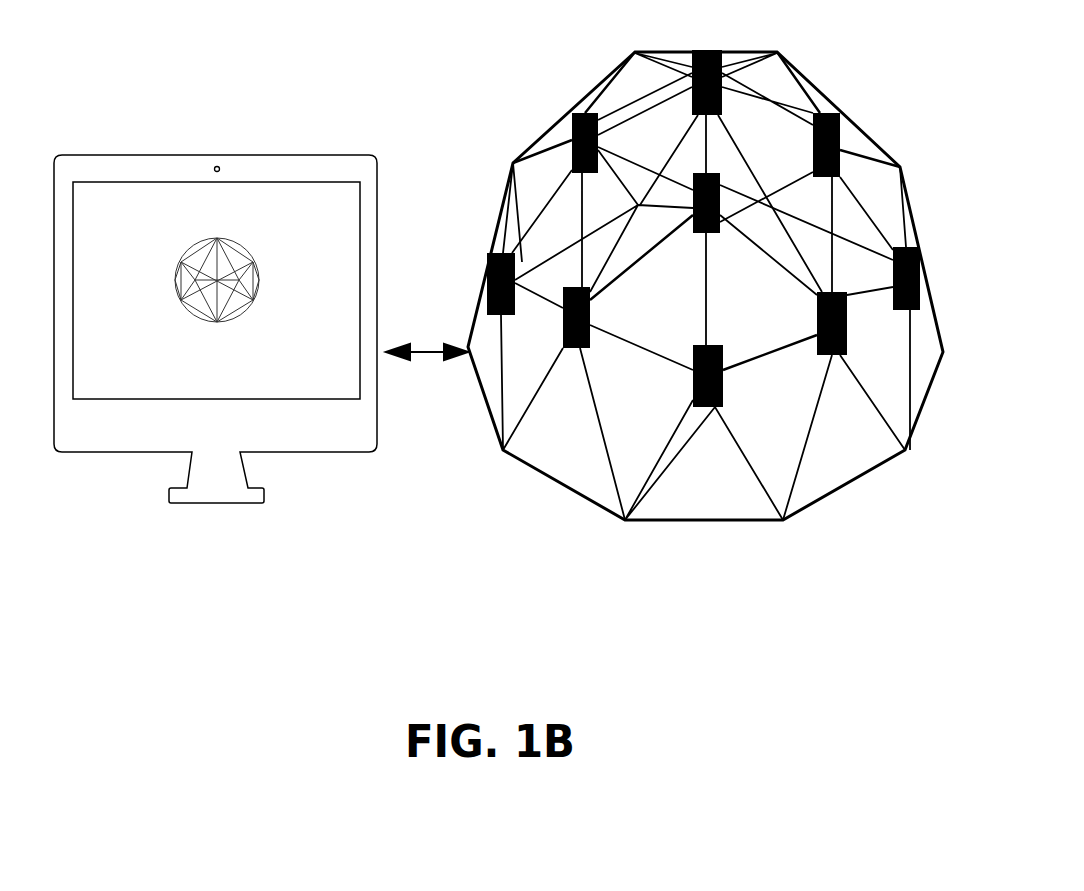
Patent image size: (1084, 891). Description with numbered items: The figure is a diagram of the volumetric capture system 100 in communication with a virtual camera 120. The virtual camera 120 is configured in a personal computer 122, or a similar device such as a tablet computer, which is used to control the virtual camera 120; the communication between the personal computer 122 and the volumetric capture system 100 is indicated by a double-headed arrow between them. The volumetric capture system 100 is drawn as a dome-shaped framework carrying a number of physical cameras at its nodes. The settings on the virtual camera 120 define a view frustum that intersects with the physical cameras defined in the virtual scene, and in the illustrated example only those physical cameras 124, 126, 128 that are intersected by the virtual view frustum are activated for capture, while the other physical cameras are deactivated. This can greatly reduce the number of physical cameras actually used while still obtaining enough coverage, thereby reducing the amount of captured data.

The volumetric capture system 100 is at (887, 84).
The virtual camera 120 is at (162, 321).
The personal computer 122 is at (133, 491).
The physical camera 124 is at (645, 199).
The physical camera 126 is at (545, 344).
The physical camera 128 is at (641, 377).